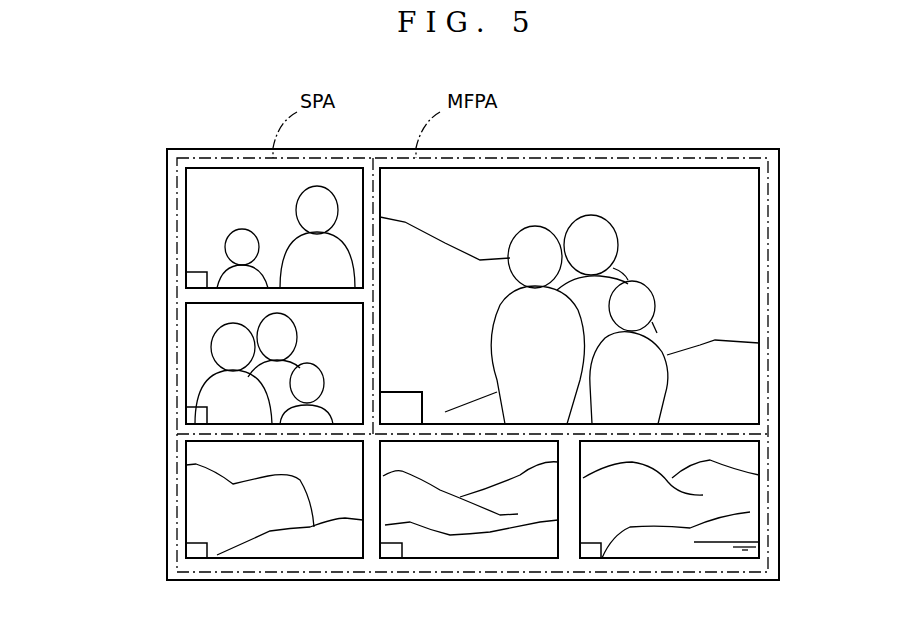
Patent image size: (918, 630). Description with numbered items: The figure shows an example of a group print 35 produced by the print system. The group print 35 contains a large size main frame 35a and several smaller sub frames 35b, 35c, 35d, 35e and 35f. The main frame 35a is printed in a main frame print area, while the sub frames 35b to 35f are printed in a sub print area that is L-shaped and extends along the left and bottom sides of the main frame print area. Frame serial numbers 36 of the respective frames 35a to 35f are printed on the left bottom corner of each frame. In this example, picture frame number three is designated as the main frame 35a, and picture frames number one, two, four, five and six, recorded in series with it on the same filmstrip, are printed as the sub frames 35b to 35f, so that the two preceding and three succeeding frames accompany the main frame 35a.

The group print 35 is at (233, 146).
The main frame 35a is at (572, 180).
The sub frame 35b is at (200, 240).
The sub frame 35c is at (200, 372).
The sub frame 35d is at (200, 505).
The sub frame 35e is at (431, 560).
The sub frame 35f is at (645, 560).
The frame serial number 36 is at (187, 281).